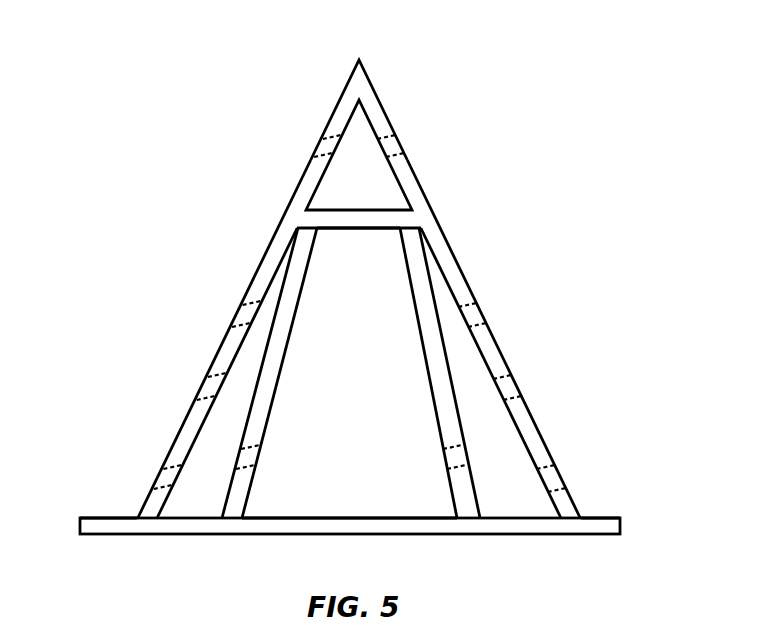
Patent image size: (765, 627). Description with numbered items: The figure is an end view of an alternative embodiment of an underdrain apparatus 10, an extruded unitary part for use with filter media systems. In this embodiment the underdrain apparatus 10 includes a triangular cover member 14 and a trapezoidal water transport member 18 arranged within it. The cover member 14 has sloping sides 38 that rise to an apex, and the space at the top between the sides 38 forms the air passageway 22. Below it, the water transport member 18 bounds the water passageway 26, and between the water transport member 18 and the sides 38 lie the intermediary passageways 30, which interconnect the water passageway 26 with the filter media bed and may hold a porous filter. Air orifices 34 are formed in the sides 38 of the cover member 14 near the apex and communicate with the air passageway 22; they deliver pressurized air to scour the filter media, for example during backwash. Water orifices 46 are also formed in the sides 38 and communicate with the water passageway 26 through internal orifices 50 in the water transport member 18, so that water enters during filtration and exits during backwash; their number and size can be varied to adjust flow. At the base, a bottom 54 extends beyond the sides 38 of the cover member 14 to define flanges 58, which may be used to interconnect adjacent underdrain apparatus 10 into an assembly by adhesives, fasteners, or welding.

The underdrain apparatus 10 is at (433, 64).
The cover member 14 is at (343, 95).
The water transport member 18 is at (304, 274).
The air passageway 22 is at (372, 190).
The water passageway 26 is at (367, 392).
The intermediary passageway 30 is at (215, 496).
The air orifice 34 is at (320, 145).
The side 38 is at (262, 258).
The water orifice 46 is at (201, 384).
The internal orifice 50 is at (259, 453).
The bottom 54 is at (440, 534).
The flange 58 is at (98, 518).